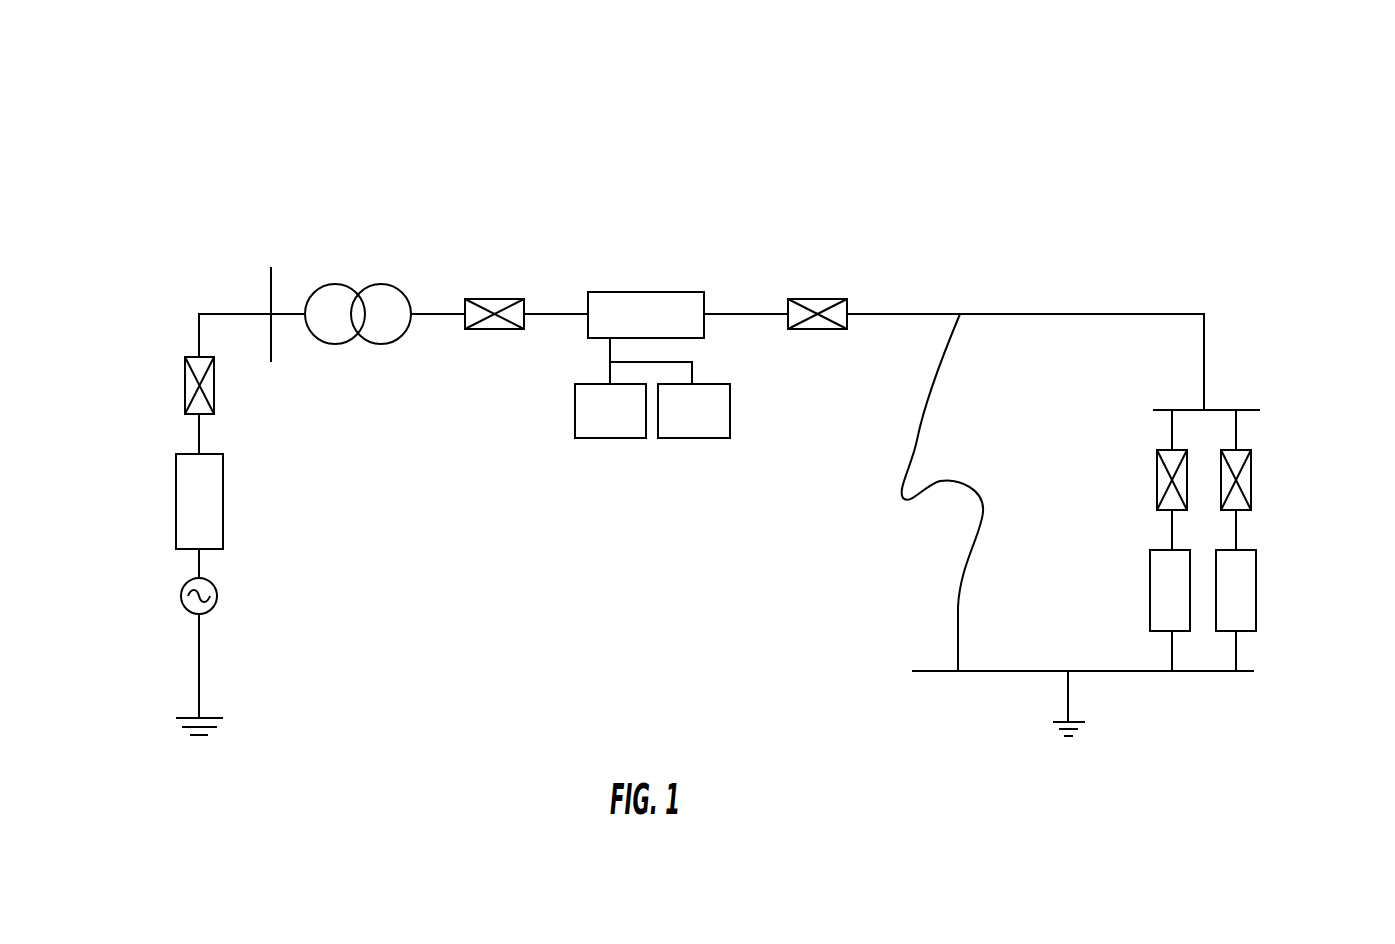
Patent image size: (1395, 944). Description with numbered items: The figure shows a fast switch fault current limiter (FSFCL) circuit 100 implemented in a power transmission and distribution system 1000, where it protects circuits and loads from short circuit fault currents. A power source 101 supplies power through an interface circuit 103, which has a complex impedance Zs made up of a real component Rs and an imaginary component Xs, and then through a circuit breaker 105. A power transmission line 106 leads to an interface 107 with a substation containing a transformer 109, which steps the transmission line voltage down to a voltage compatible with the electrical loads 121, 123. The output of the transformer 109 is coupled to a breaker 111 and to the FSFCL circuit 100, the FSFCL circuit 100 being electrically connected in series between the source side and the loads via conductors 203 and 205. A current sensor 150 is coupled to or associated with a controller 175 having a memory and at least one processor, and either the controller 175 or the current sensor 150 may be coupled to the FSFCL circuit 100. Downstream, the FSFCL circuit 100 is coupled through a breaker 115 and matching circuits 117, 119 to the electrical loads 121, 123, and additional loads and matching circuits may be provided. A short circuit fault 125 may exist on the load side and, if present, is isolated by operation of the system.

The power transmission and distribution system 1000 is at (918, 134).
The power source 101 is at (190, 612).
The interface circuit 103 is at (176, 513).
The circuit breaker 105 is at (185, 393).
The power transmission line 106 is at (222, 313).
The interface 107 is at (281, 272).
The transformer 109 is at (397, 284).
The breaker 111 is at (494, 299).
The conductor 203 is at (577, 305).
The fast switch fault current limiter circuit 100 is at (690, 292).
The conductor 205 is at (767, 305).
The current sensor 150 is at (631, 423).
The controller 175 is at (713, 423).
The breaker 115 is at (830, 298).
The short circuit fault 125 is at (912, 452).
The matching circuit 117 is at (1157, 487).
The matching circuit 119 is at (1251, 480).
The electrical load 121 is at (1150, 590).
The electrical load 123 is at (1256, 590).